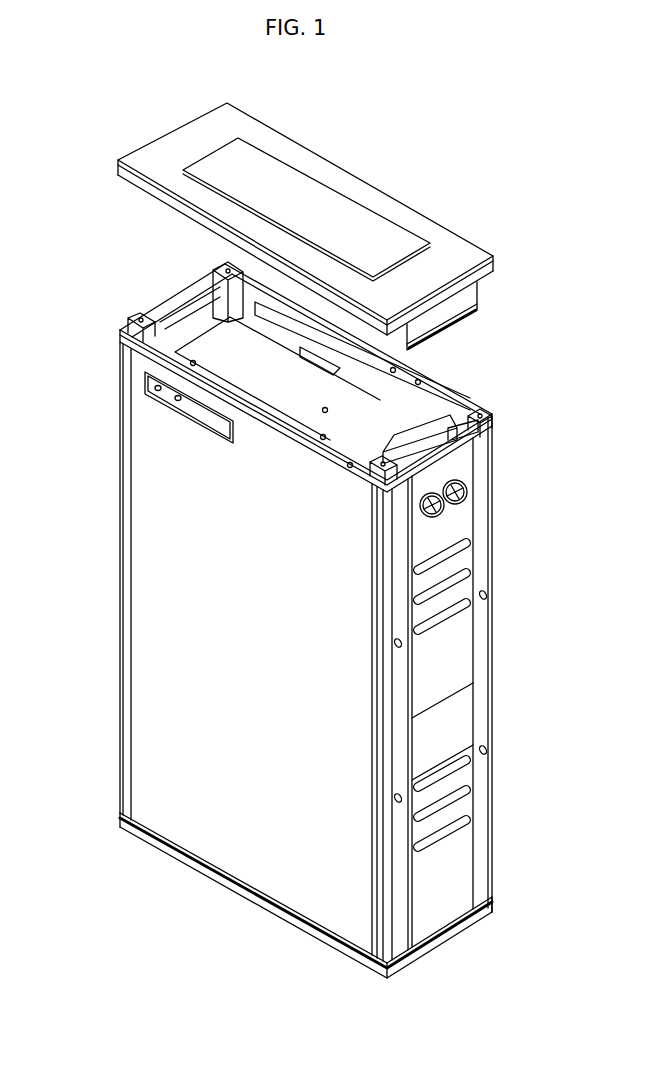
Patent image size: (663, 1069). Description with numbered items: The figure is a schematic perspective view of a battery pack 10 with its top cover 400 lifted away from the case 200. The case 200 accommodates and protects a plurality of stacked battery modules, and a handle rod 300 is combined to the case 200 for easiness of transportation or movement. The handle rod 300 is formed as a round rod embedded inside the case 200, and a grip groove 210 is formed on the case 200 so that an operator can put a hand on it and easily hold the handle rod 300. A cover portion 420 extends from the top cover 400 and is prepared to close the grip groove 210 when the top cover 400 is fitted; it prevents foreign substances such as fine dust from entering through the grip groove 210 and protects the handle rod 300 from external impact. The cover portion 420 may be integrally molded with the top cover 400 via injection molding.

The battery pack 10 is at (430, 124).
The case 200 is at (110, 529).
The grip groove 210 is at (418, 443).
The handle rod 300 is at (457, 435).
The top cover 400 is at (300, 123).
The cover portion 420 is at (467, 300).